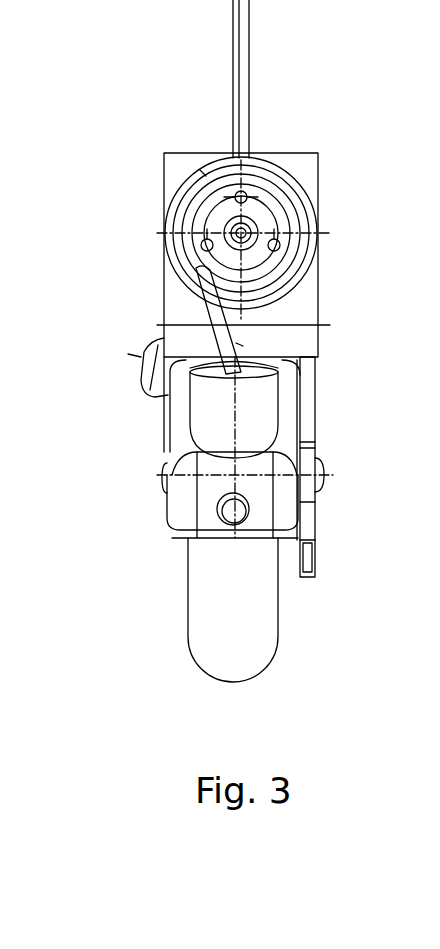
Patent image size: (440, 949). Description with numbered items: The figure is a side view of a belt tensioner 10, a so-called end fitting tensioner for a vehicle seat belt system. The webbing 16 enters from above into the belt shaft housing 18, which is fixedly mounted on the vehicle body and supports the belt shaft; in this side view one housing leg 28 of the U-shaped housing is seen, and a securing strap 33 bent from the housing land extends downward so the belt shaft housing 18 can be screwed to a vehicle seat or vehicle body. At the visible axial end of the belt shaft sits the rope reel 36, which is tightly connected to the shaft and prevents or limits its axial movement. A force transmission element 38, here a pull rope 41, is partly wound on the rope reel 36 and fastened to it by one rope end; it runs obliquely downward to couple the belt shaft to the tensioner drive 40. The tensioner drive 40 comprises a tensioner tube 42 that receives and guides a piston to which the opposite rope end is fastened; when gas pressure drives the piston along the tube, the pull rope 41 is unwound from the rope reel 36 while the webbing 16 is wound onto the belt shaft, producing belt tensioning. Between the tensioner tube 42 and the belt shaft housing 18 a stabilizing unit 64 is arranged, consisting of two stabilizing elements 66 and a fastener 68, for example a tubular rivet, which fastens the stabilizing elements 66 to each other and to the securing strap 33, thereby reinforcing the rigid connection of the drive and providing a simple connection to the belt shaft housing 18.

The belt tensioner 10 is at (124, 90).
The webbing 16 is at (249, 60).
The belt shaft housing 18 is at (300, 310).
The housing leg 28 is at (266, 227).
The securing strap 33 is at (313, 548).
The rope reel 36 is at (275, 217).
The force transmission element 38 is at (143, 320).
The pull rope 41 is at (207, 313).
The tensioner drive 40 is at (138, 568).
The tensioner tube 42 is at (258, 628).
The stabilizing unit 64 is at (262, 546).
The stabilizing element 66 is at (180, 506).
The fastener 68 is at (322, 472).